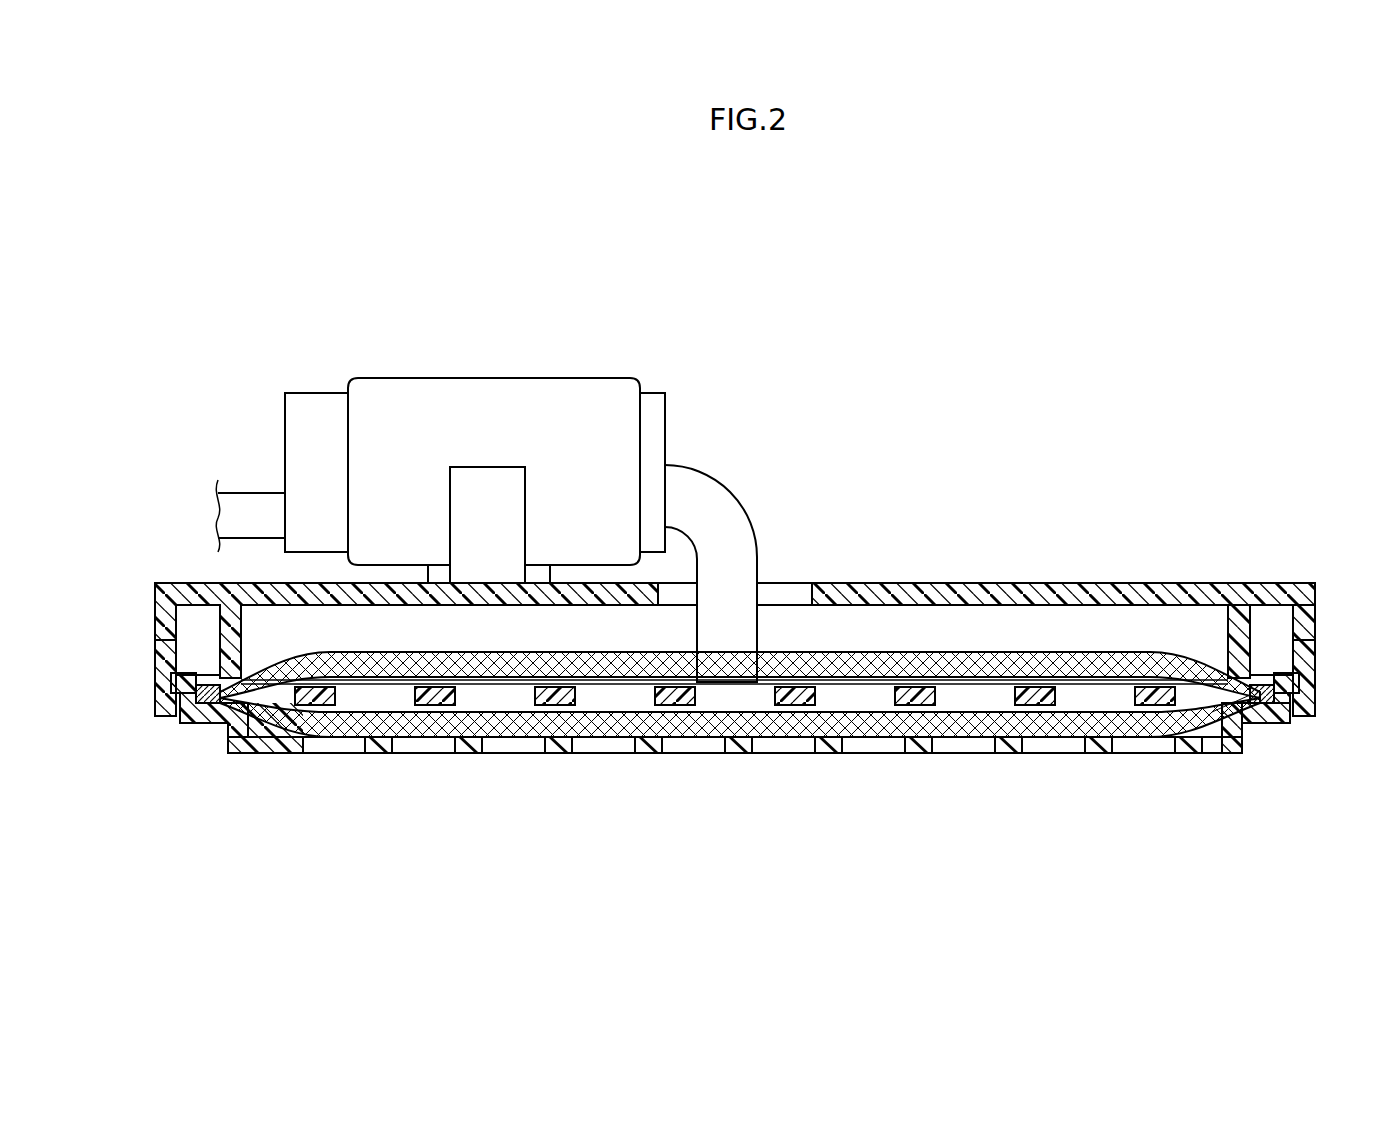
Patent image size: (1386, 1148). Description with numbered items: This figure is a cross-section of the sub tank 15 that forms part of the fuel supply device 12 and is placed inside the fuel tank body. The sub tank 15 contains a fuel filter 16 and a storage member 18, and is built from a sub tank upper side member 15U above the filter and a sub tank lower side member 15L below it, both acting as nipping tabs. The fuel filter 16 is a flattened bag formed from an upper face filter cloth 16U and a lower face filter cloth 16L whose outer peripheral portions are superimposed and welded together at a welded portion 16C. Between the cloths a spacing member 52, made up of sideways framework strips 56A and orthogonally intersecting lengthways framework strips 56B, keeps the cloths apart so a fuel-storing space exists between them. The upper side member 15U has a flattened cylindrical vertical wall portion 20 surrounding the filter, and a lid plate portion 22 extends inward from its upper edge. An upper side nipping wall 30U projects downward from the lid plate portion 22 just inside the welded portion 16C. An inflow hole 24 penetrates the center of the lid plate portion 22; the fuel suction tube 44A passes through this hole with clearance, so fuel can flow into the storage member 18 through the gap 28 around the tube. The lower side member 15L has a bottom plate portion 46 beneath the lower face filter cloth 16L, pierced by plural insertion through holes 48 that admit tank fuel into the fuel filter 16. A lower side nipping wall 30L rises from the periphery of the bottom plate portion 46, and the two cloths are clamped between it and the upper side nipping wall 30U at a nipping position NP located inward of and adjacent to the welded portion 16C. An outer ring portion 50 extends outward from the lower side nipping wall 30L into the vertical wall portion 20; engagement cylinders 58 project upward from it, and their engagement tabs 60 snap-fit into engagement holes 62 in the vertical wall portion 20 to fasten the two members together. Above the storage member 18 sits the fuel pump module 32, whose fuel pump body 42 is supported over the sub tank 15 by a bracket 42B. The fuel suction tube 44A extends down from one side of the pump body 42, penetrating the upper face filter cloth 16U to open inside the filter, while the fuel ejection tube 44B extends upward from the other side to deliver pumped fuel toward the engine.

The fuel supply device 12 is at (1083, 266).
The sub tank 15 is at (1121, 521).
The sub tank upper side member 15U is at (158, 601).
The sub tank lower side member 15L is at (231, 755).
The fuel filter 16 is at (1194, 732).
The upper face filter cloth 16U is at (270, 700).
The lower face filter cloth 16L is at (342, 730).
The welded portion 16C is at (204, 712).
The storage member 18 is at (1036, 580).
The vertical wall portion 20 is at (1312, 601).
The lid plate portion 22 is at (960, 592).
The inflow hole 24 is at (810, 597).
The gap 28 is at (769, 580).
The upper side nipping wall 30U is at (1236, 634).
The lower side nipping wall 30L is at (1240, 730).
The fuel pump module 32 is at (662, 348).
The fuel pump body 42 is at (406, 395).
The bracket 42B is at (489, 487).
The fuel suction tube 44A is at (730, 498).
The fuel ejection tube 44B is at (248, 493).
The bottom plate portion 46 is at (294, 754).
The insertion through holes 48 is at (477, 748).
The outer ring portion 50 is at (1266, 714).
The spacing member 52 is at (412, 705).
The sideways framework strips 56A is at (973, 684).
The lengthways framework strips 56B is at (893, 690).
The engagement cylinders 58 is at (195, 672).
The engagement tabs 60 is at (182, 683).
The engagement holes 62 is at (165, 658).
The nipping position NP is at (1222, 720).